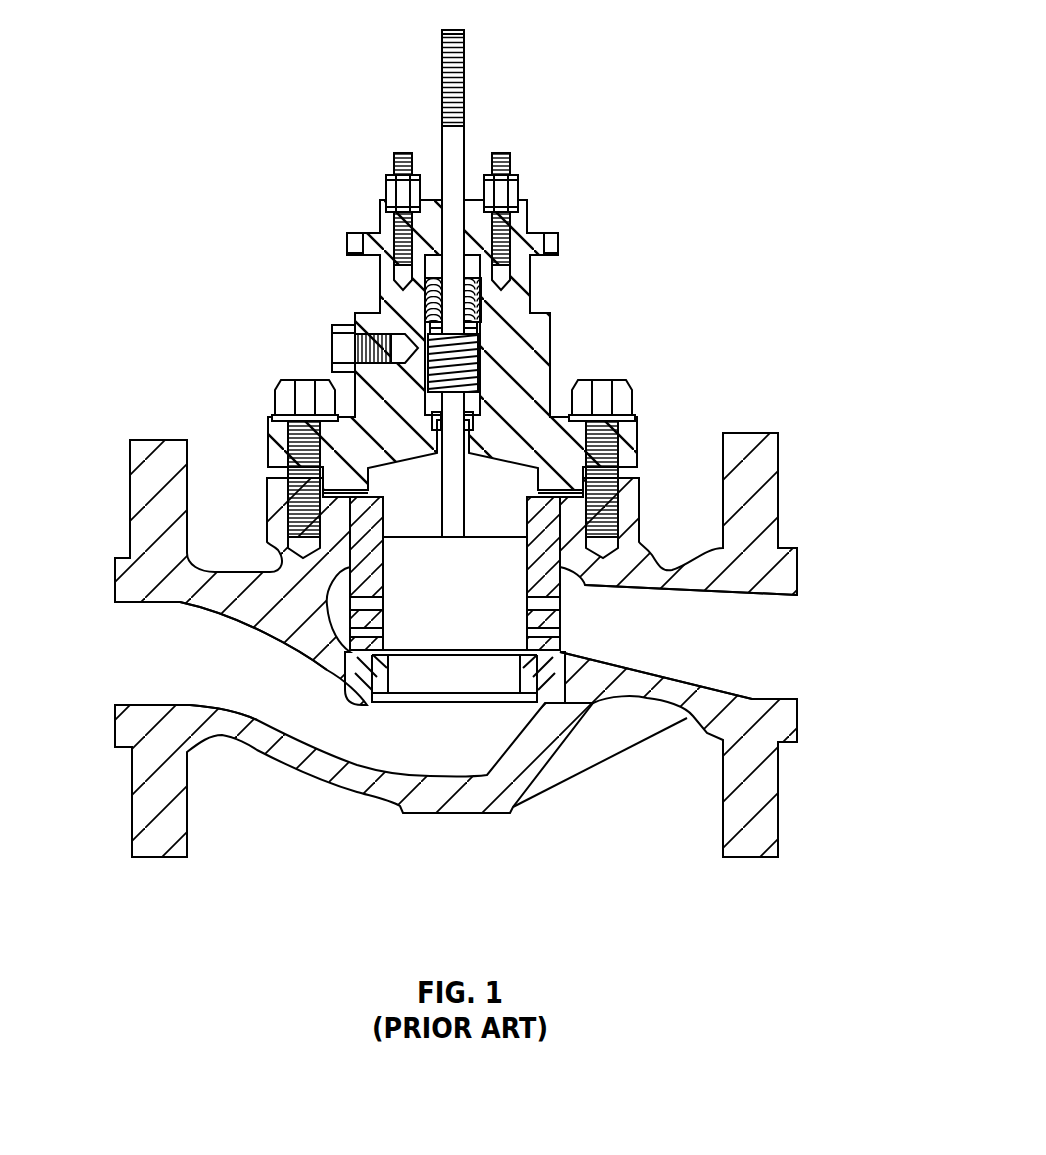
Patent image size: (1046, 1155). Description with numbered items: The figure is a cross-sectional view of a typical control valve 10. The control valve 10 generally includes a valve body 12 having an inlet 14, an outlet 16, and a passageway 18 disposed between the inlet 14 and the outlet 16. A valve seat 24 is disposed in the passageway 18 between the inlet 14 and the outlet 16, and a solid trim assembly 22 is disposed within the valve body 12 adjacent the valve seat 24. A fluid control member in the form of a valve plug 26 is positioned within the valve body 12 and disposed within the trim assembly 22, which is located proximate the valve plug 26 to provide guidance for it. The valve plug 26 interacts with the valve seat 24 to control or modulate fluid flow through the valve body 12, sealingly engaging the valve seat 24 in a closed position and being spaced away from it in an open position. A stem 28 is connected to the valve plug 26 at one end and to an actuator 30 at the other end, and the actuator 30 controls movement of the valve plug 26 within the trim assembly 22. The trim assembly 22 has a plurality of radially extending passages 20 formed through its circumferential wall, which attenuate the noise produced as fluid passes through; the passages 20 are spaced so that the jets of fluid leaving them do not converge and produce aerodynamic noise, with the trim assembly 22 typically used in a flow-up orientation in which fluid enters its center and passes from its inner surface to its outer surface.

The control valve 10 is at (602, 110).
The valve body 12 is at (797, 573).
The inlet 14 is at (128, 628).
The outlet 16 is at (783, 661).
The passageway 18 is at (380, 698).
The radially extending passages 20 is at (560, 607).
The trim assembly 22 is at (560, 540).
The valve seat 24 is at (421, 645).
The valve plug 26 is at (475, 633).
The stem 28 is at (457, 422).
The actuator 30 is at (528, 298).